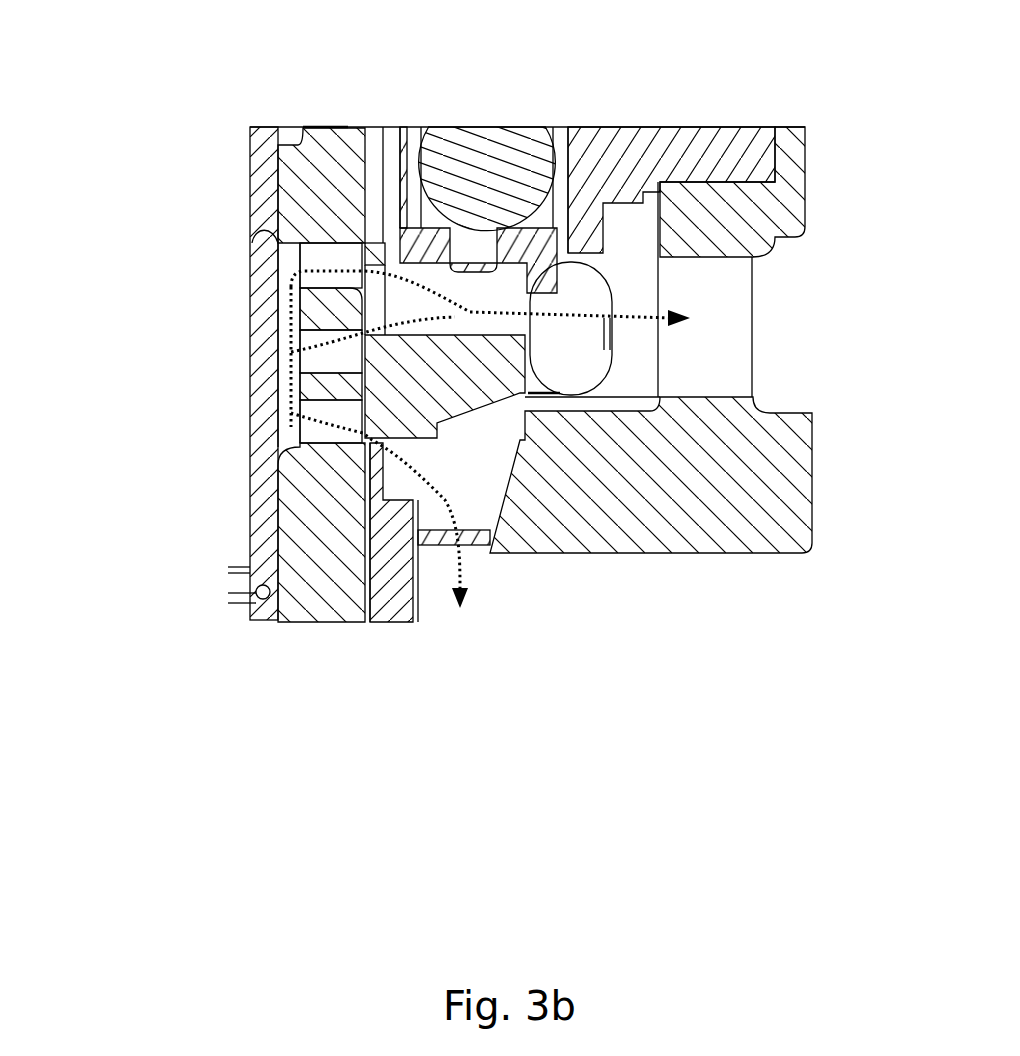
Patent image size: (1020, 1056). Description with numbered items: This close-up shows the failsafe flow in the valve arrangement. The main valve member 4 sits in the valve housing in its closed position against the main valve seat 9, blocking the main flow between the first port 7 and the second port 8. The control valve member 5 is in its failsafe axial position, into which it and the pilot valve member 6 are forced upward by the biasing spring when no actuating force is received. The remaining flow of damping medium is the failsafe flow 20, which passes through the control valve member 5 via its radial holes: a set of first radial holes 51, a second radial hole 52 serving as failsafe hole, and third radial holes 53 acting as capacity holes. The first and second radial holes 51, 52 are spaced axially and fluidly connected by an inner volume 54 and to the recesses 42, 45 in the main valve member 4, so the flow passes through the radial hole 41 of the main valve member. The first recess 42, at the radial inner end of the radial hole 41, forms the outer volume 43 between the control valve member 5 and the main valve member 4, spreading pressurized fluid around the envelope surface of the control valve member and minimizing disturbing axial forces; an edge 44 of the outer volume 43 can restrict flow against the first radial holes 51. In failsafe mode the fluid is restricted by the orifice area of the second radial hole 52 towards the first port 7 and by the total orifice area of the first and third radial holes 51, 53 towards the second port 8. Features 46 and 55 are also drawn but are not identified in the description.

The main valve member 4 is at (375, 618).
The control valve member 5 is at (322, 128).
The pilot valve member 6 is at (262, 497).
The first port 7 is at (418, 563).
The second port 8 is at (800, 357).
The main valve seat 9 is at (548, 400).
The failsafe flow 20 is at (633, 306).
The radial hole 41 is at (483, 292).
The first recess 42 is at (477, 300).
The outer volume 43 is at (380, 300).
The edge 44 is at (300, 292).
The recess 45 is at (337, 440).
The outlet chamber 46 is at (422, 505).
The first radial holes 51 is at (322, 257).
The second radial hole 52 is at (338, 422).
The third radial holes 53 is at (337, 357).
The inner volume 54 is at (278, 300).
The seal 55 is at (260, 237).